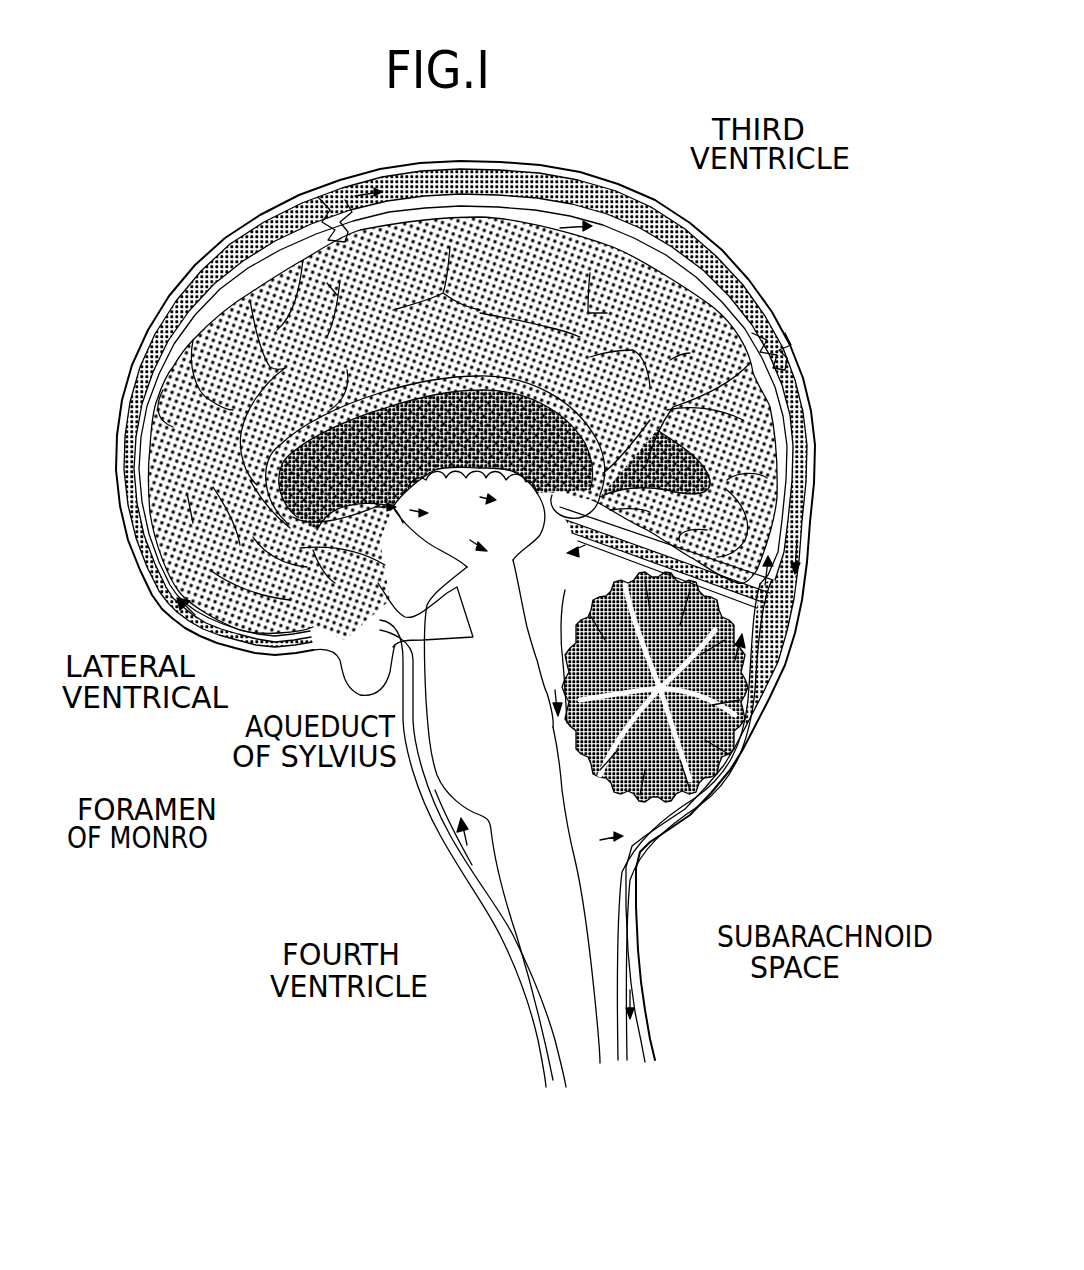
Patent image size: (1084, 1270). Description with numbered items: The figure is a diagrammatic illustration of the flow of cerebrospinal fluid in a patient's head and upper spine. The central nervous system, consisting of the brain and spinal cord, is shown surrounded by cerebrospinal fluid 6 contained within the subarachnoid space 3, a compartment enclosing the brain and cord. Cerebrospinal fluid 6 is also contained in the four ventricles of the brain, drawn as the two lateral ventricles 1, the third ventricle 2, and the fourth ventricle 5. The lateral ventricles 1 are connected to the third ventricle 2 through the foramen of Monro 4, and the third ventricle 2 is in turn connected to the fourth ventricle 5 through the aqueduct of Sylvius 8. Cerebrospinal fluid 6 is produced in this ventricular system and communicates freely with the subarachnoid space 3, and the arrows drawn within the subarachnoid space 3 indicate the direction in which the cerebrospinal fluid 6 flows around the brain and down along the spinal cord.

The lateral ventricles 1 is at (327, 497).
The third ventricle 2 is at (523, 497).
The subarachnoid space 3 is at (647, 973).
The foramen of Monro 4 is at (392, 527).
The fourth ventricle 5 is at (553, 725).
The cerebrospinal fluid 6 is at (463, 853).
The aqueduct of Sylvius 8 is at (507, 575).